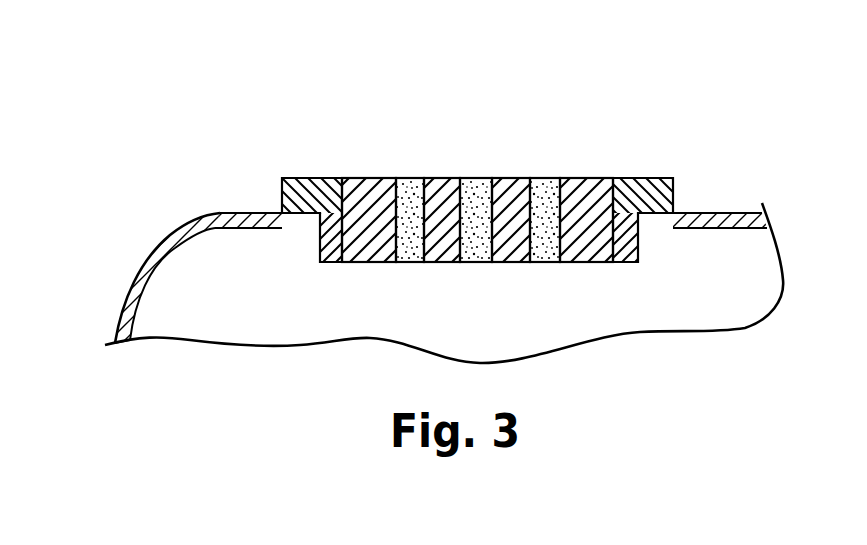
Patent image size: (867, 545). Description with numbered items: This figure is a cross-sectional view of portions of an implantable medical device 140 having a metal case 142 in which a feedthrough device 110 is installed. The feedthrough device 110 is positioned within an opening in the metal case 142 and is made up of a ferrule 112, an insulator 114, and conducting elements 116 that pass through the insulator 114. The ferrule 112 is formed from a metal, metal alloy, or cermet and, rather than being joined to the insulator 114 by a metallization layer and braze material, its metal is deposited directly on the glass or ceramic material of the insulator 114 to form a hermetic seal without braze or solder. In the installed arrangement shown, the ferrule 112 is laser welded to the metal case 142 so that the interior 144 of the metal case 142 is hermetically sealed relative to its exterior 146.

The implantable medical device 140 is at (665, 65).
The feedthrough device 110 is at (360, 178).
The ferrule 112 is at (310, 178).
The insulator 114 is at (383, 178).
The conducting elements 116 is at (410, 263).
The metal case 142 is at (143, 247).
The interior 144 is at (256, 289).
The exterior 146 is at (179, 190).